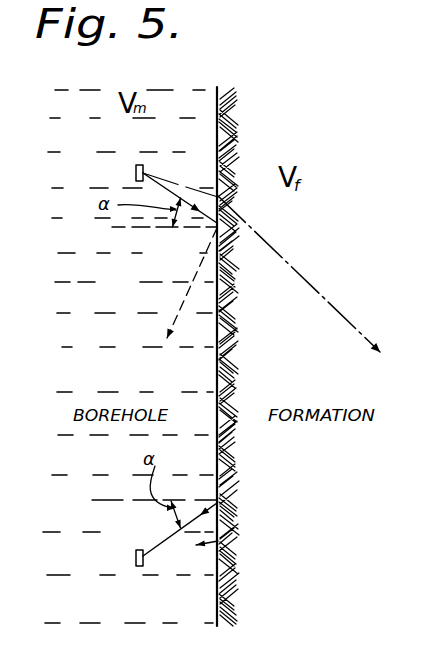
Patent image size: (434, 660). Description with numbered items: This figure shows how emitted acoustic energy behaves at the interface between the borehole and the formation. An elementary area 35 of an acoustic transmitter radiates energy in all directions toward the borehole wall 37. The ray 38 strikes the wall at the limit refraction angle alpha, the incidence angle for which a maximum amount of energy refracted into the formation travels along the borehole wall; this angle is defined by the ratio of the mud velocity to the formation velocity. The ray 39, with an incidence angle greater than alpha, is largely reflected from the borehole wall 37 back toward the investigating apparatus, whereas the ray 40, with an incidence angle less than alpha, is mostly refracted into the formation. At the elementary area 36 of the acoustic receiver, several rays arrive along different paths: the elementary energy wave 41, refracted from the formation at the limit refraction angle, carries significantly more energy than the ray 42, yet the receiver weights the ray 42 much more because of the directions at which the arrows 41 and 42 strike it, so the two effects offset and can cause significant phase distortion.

The elementary area of an acoustic transmitter 35 is at (140, 163).
The elementary area of an acoustic receiver 36 is at (135, 562).
The borehole wall 37 is at (240, 124).
The ray at limit refraction angle 38 is at (178, 199).
The reflected ray 39 is at (205, 240).
The refracted ray 40 is at (170, 181).
The elementary energy wave 41 is at (161, 543).
The ray striking the receiver 42 is at (173, 550).